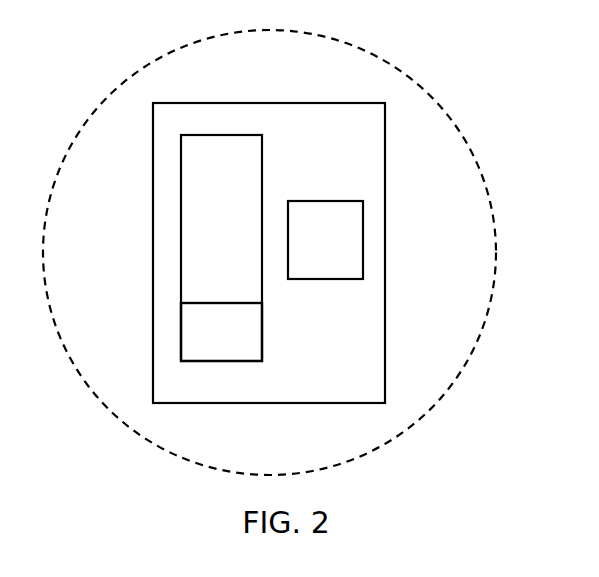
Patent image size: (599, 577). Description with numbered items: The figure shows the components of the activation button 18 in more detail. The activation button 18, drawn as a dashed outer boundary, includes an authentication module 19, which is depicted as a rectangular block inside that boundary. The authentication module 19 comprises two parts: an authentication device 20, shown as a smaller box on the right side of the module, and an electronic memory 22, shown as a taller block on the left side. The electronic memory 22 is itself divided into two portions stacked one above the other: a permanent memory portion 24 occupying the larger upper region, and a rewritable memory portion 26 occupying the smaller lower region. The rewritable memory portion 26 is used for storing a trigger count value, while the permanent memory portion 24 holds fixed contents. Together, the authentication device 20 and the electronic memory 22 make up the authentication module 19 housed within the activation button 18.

The activation button 18 is at (422, 418).
The authentication module 19 is at (270, 404).
The authentication device 20 is at (314, 252).
The electronic memory 22 is at (262, 336).
The permanent memory portion 24 is at (211, 228).
The rewritable memory portion 26 is at (209, 344).